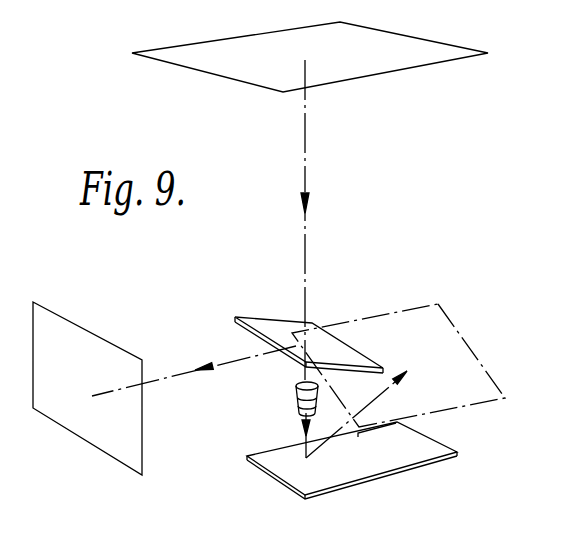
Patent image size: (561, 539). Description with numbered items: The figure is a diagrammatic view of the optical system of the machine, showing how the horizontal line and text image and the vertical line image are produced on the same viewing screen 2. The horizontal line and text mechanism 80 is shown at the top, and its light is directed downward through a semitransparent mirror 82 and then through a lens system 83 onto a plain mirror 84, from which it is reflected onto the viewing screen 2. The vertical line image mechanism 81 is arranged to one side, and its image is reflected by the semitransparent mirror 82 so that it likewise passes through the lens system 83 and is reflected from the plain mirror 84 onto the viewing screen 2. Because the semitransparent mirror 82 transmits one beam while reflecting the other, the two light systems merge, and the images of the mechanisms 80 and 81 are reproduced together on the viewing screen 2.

The horizontal line and text mechanism 80 is at (408, 68).
The vertical line image mechanism 81 is at (103, 435).
The semitransparent mirror 82 is at (323, 340).
The lens system 83 is at (295, 400).
The plain mirror 84 is at (402, 455).
The viewing screen 2 is at (463, 352).